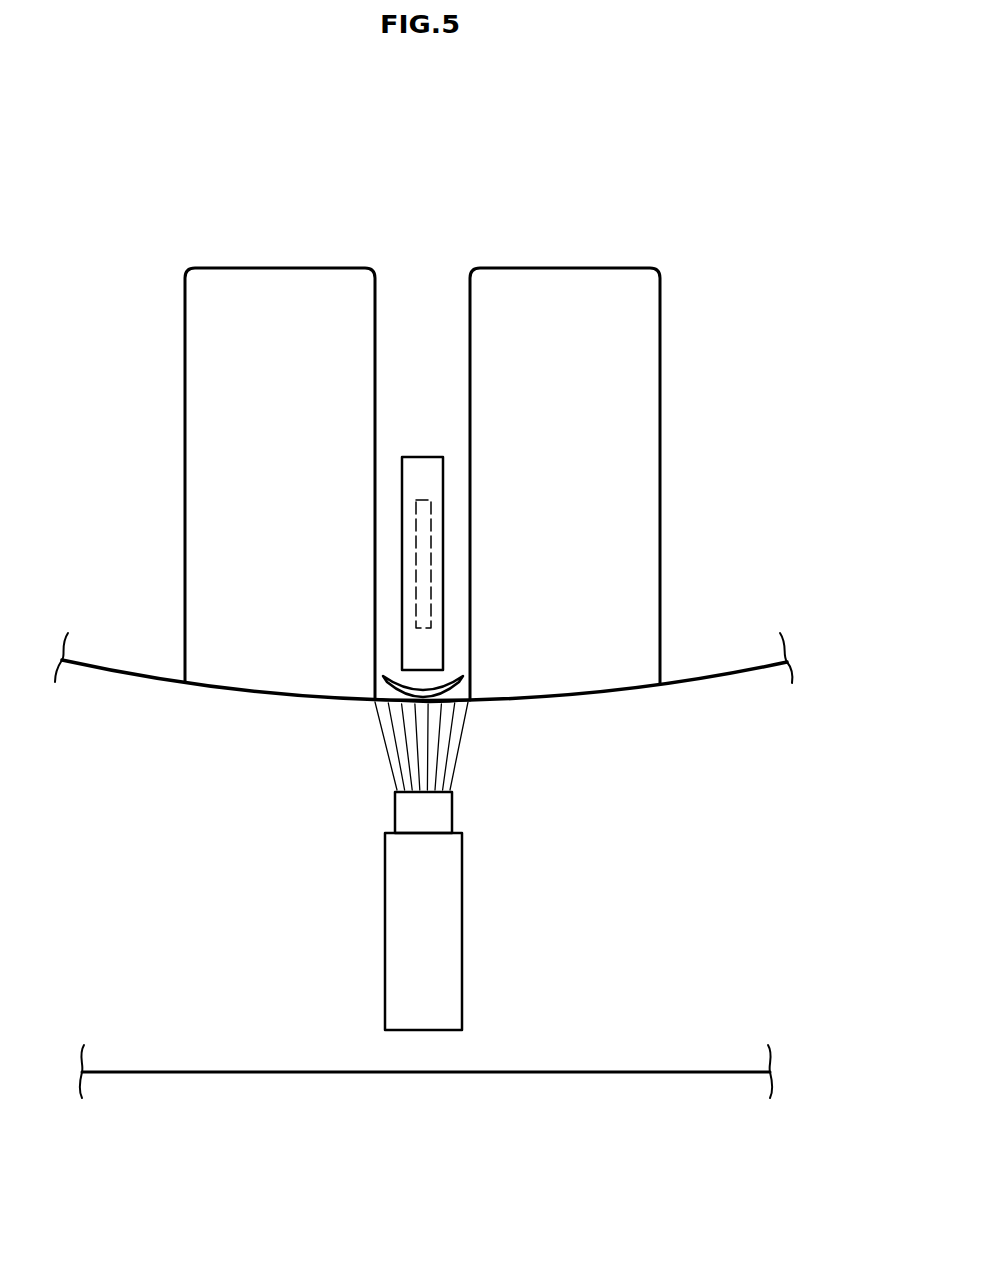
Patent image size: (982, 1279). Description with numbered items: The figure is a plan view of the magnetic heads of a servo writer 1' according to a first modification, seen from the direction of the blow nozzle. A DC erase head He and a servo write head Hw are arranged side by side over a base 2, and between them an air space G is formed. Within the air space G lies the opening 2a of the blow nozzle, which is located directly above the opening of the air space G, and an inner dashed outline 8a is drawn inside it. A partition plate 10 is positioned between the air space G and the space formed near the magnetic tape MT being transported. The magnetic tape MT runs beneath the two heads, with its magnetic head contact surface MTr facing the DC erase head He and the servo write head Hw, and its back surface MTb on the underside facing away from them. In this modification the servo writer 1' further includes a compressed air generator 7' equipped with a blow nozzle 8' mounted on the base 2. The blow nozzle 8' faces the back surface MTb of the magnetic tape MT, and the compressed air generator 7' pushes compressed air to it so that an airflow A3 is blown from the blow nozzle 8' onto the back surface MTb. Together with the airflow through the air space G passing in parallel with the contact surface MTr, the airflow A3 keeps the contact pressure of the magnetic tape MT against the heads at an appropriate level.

The servo writer 1' is at (450, 411).
The DC erase head He is at (278, 270).
The servo write head Hw is at (575, 268).
The air space G is at (422, 288).
The opening 2a is at (433, 485).
The blow nozzle opening 8a is at (423, 558).
The partition plate 10 is at (448, 680).
The magnetic head contact surface MTr is at (472, 698).
The magnetic tape MT is at (688, 684).
The back surface MTb is at (468, 721).
The airflow A3 is at (423, 743).
The blow nozzle 8' is at (543, 826).
The compressed air generator 7' is at (604, 931).
The base 2 is at (412, 1043).